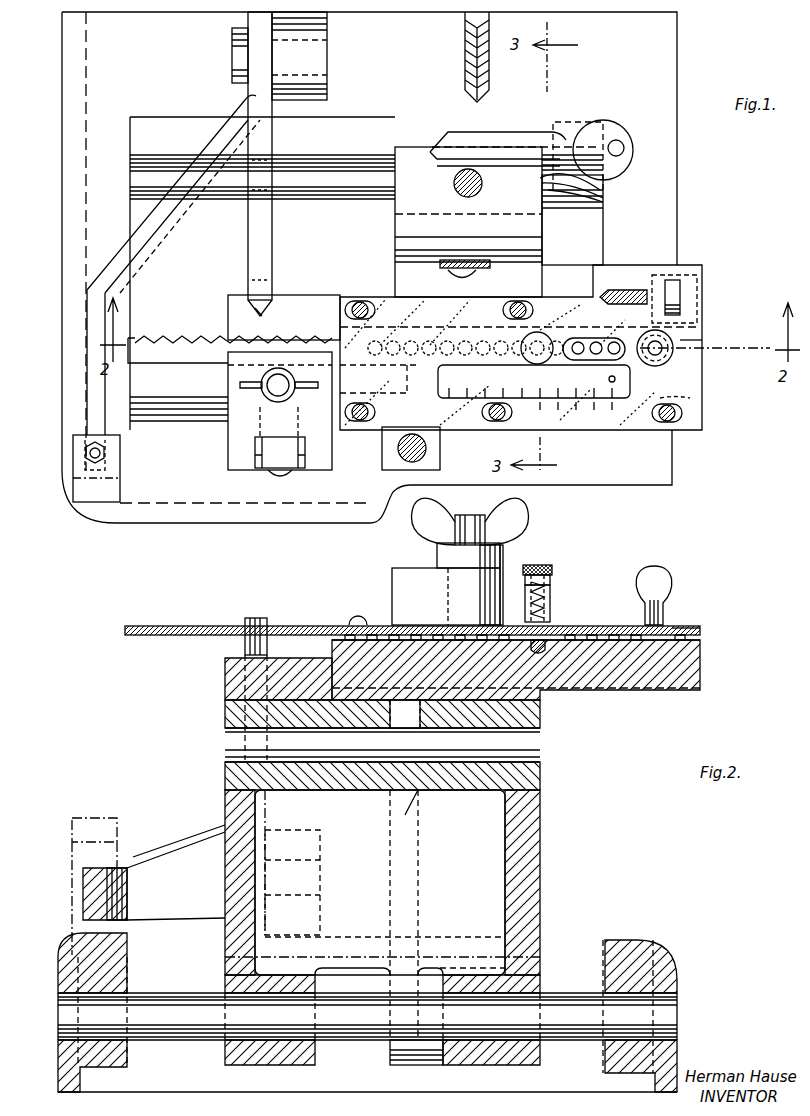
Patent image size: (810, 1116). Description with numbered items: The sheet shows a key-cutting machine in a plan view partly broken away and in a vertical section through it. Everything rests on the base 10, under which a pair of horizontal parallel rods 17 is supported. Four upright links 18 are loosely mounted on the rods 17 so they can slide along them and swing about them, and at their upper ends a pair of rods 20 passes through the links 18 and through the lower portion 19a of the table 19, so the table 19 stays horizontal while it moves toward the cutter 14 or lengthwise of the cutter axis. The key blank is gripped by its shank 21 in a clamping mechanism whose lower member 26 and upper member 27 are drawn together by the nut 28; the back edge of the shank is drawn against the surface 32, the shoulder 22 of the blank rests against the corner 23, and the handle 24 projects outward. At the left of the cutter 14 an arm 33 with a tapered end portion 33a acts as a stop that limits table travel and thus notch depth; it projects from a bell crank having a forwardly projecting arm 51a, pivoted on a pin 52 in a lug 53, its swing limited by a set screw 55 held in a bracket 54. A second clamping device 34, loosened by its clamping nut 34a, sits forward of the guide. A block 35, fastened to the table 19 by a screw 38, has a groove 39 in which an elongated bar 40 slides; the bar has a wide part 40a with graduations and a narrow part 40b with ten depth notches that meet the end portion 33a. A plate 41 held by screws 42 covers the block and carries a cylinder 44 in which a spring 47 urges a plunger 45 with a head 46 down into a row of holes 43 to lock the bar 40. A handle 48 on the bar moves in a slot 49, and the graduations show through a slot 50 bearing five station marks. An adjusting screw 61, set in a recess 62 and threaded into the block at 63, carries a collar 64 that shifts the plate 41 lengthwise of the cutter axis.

In FIG. 1, the table or base 10 is at (205, 523).
In FIG. 2, the table or base 10 is at (640, 945).
In FIG. 1, the cutter 14 is at (465, 96).
In FIG. 2, the parallel cylindrical rods 17 is at (557, 1005).
In FIG. 2, the upright arms or links 18 is at (270, 880).
In FIG. 2, the block or table 19 is at (300, 686).
In FIG. 2, the lower portion of the table 19a is at (412, 814).
In FIG. 2, the upper shafts or rods 20 is at (540, 745).
In FIG. 1, the shank of the key blank 21 is at (505, 140).
In FIG. 1, the shoulder of the key blank 22 is at (575, 180).
In FIG. 1, the corner of the clamping mechanism 23 is at (605, 200).
In FIG. 1, the handle of the key blank 24 is at (618, 130).
In FIG. 1, the lower member of the clamping mechanism 26 is at (540, 237).
In FIG. 2, the upper member of the clamping mechanism 27 is at (400, 568).
In FIG. 2, the nut 28 is at (515, 512).
In FIG. 1, the surface of the clamping device 32 is at (410, 147).
In FIG. 1, the arm, guide or stop 33 is at (272, 240).
In FIG. 1, the end portion of the guide 33a is at (270, 310).
In FIG. 2, the end portion of the guide 33a is at (248, 618).
In FIG. 1, the key-holding or clamping device 34 is at (235, 440).
In FIG. 1, the clamping nut 34a is at (240, 383).
In FIG. 2, the block or member 35 is at (642, 690).
In FIG. 1, the screw 38 is at (426, 450).
In FIG. 1, the longitudinal recess or groove 39 is at (700, 400).
In FIG. 1, the elongated plate or bar 40 is at (302, 625).
In FIG. 2, the elongated plate or bar 40 is at (310, 624).
In FIG. 1, the wide part of the bar 40a is at (690, 386).
In FIG. 1, the narrow part of the bar 40b is at (322, 297).
In FIG. 1, the plate 41 is at (548, 318).
In FIG. 2, the plate 41 is at (503, 580).
In FIG. 1, the screws 42 is at (520, 305).
In FIG. 2, the holes 43 is at (580, 630).
In FIG. 2, the cylinder 44 is at (552, 605).
In FIG. 2, the pin or plunger 45 is at (550, 578).
In FIG. 1, the head or finger piece 46 is at (548, 340).
In FIG. 2, the head or finger piece 46 is at (537, 565).
In FIG. 2, the spring 47 is at (552, 605).
In FIG. 1, the handle 48 is at (668, 355).
In FIG. 2, the handle 48 is at (660, 590).
In FIG. 1, the slot 49 is at (688, 340).
In FIG. 2, the slot 49 is at (685, 626).
In FIG. 1, the slot 50 is at (468, 365).
In FIG. 1, the forwardly projecting arm 51a is at (112, 275).
In FIG. 2, the forwardly projecting arm 51a is at (133, 857).
In FIG. 1, the pin 52 is at (310, 50).
In FIG. 1, the lug 53 is at (312, 42).
In FIG. 1, the bracket 54 is at (115, 510).
In FIG. 1, the adjustable set screw 55 is at (108, 452).
In FIG. 1, the adjusting screw 61 is at (700, 278).
In FIG. 1, the recess 62 is at (656, 290).
In FIG. 1, the threaded portion 63 is at (622, 290).
In FIG. 1, the collar 64 is at (675, 285).